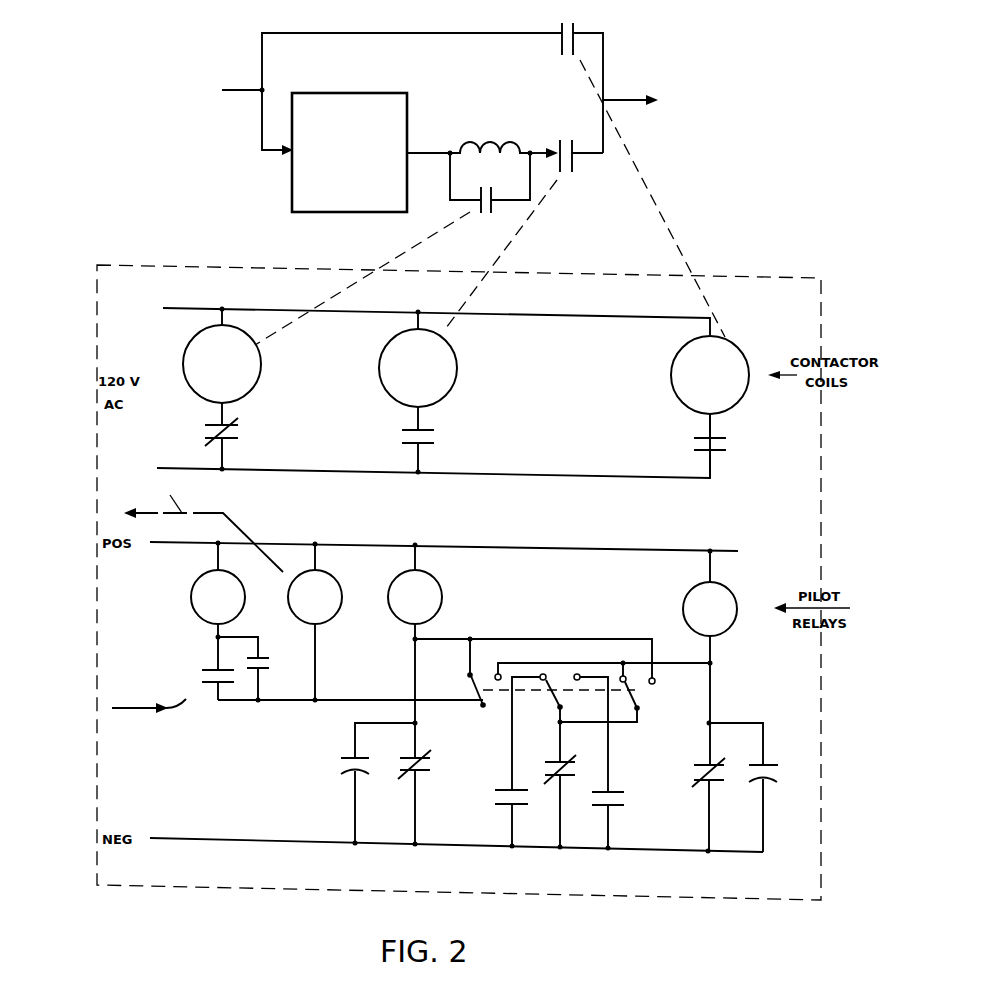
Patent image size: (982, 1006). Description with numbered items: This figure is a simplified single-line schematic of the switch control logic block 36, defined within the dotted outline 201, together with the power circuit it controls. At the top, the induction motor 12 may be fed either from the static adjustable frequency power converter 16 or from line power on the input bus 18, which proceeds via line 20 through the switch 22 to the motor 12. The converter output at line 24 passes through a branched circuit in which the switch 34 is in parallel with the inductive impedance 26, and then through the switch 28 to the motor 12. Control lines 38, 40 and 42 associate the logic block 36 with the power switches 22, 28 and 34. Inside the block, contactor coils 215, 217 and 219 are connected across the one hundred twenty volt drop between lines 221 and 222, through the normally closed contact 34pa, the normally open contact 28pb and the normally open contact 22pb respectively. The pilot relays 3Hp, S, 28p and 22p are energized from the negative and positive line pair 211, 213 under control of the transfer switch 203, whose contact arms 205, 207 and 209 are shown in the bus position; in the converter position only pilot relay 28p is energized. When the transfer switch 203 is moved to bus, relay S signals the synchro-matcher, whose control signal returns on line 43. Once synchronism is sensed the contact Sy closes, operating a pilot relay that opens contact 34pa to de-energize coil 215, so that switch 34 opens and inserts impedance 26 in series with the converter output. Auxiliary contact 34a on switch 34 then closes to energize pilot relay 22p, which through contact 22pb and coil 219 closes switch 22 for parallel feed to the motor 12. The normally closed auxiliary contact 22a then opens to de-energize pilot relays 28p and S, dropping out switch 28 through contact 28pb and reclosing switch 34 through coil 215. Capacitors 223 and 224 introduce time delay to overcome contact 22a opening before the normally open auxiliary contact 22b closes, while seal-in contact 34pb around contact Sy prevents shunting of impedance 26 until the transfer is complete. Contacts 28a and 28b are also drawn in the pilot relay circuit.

The motor 12 is at (675, 111).
The static adjustable frequency power converter 16 is at (298, 183).
The input bus 18 is at (245, 90).
The line 20 is at (405, 35).
The switch 22 is at (578, 22).
The line 24 is at (427, 152).
The inductive impedance 26 is at (478, 142).
The switch 28 is at (568, 176).
The switch 34 is at (486, 215).
The switch control logic block 36 is at (220, 892).
The control line 38 is at (698, 292).
The control line 40 is at (478, 283).
The control line 42 is at (352, 280).
The dotted outline 201 is at (823, 735).
The transfer switch 203 is at (561, 696).
The contact arm 205 is at (475, 700).
The contact arm 207 is at (553, 699).
The contact arm 209 is at (640, 705).
The negative line 211 is at (648, 855).
The positive line 213 is at (543, 548).
The contactor coil 215 is at (252, 372).
The contactor coil 217 is at (445, 372).
The contactor coil 219 is at (733, 392).
The line 221 is at (196, 306).
The line 222 is at (183, 466).
The capacitor 223 is at (350, 750).
The capacitor 224 is at (770, 785).
The line 43 is at (173, 712).
The normally closed contact 34pa is at (248, 443).
The normally open contact 28pb is at (446, 449).
The normally open contact 22pb is at (739, 457).
The seal-in contact 34pb is at (266, 668).
The normally closed auxiliary contact 22a is at (431, 796).
The normally open auxiliary contact 22b is at (495, 818).
The auxiliary contact 34a is at (571, 789).
The contact 28b is at (620, 820).
The contact 28a is at (719, 804).
The 3 Hp relay 3Hp is at (218, 606).
The relay S is at (315, 623).
The pilot relay 28p is at (415, 651).
The pilot relay 22p is at (710, 658).
The contact Sy is at (207, 686).